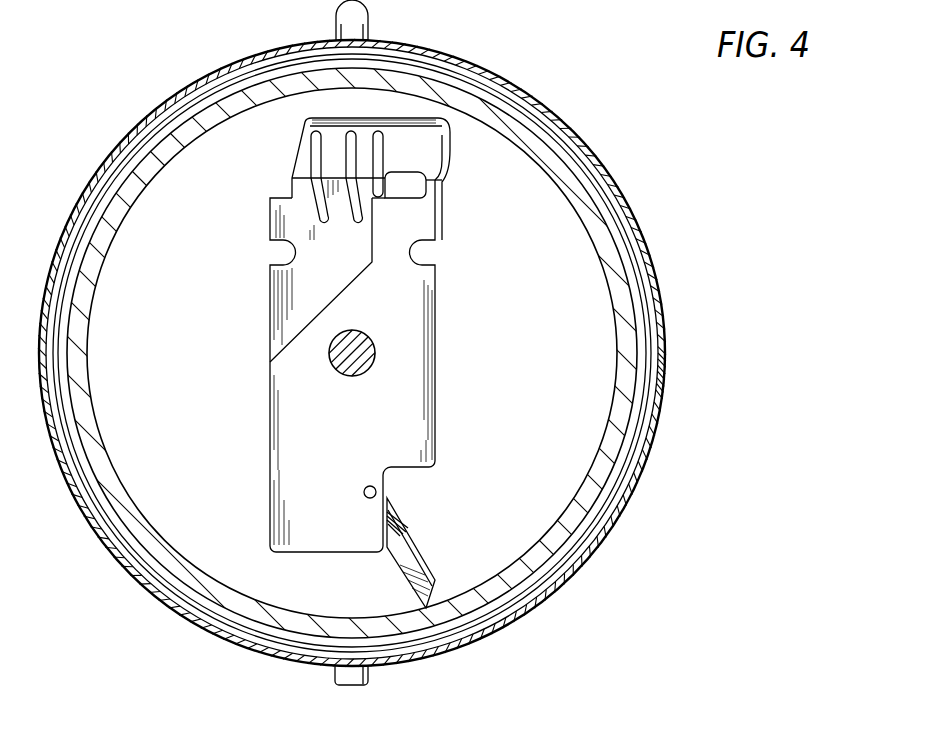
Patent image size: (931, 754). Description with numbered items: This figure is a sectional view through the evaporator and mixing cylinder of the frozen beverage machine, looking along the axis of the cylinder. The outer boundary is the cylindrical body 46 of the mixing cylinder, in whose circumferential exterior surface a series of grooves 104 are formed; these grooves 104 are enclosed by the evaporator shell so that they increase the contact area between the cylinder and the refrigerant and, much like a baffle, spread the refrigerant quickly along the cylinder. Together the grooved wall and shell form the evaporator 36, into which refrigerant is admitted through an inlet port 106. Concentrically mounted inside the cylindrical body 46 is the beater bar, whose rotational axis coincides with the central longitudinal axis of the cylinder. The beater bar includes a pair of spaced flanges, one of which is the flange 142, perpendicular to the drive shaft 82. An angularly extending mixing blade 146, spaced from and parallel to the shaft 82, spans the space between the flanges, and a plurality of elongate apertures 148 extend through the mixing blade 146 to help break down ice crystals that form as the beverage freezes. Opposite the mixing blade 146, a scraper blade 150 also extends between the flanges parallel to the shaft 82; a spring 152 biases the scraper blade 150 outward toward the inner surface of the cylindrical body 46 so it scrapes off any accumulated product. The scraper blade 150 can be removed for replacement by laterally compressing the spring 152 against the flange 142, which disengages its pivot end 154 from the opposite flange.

The evaporator 36 is at (598, 550).
The cylindrical body 46 is at (612, 290).
The drive shaft 82 is at (378, 357).
The grooves 104 is at (622, 478).
The inlet port 106 is at (340, 677).
The flange 142 is at (270, 487).
The mixing blade 146 is at (430, 154).
The elongate apertures 148 is at (306, 160).
The scraper blade 150 is at (418, 568).
The spring 152 is at (402, 513).
The pivot end 154 is at (367, 500).